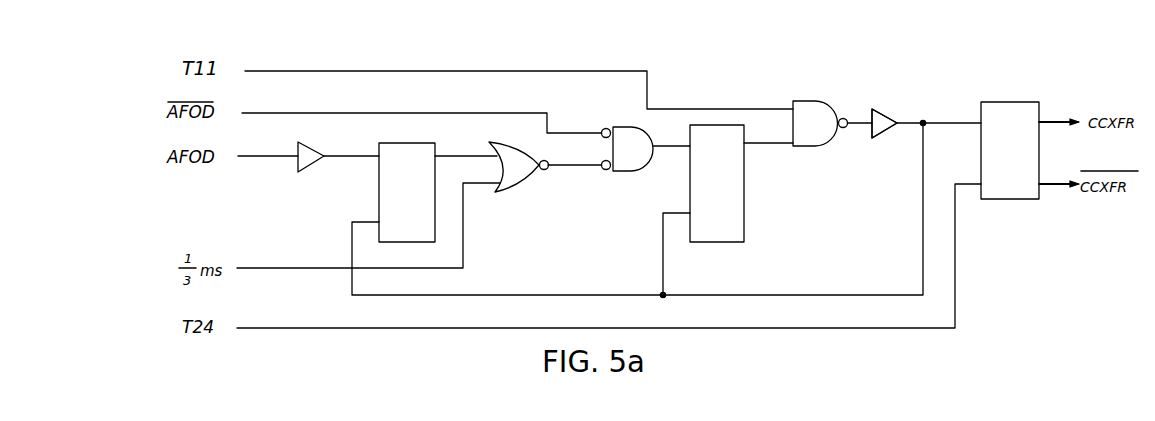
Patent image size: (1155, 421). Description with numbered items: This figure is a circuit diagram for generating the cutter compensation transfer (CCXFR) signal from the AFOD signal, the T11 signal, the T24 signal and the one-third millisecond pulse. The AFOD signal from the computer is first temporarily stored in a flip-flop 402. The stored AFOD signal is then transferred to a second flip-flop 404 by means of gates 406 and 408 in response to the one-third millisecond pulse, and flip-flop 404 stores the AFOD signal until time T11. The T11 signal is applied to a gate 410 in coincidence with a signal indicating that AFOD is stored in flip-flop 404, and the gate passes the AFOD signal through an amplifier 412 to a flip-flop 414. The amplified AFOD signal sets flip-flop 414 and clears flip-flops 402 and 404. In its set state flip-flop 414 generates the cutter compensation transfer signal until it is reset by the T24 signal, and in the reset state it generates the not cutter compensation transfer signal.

The flip-flop 402 is at (401, 152).
The flip-flop 404 is at (744, 213).
The gate 406 is at (511, 190).
The gate 408 is at (626, 175).
The gate 410 is at (822, 101).
The amplifier 412 is at (893, 111).
The flip-flop 414 is at (996, 102).